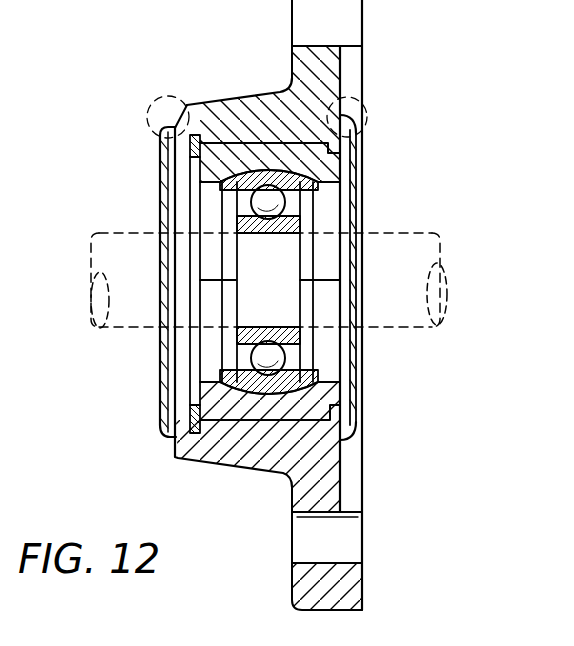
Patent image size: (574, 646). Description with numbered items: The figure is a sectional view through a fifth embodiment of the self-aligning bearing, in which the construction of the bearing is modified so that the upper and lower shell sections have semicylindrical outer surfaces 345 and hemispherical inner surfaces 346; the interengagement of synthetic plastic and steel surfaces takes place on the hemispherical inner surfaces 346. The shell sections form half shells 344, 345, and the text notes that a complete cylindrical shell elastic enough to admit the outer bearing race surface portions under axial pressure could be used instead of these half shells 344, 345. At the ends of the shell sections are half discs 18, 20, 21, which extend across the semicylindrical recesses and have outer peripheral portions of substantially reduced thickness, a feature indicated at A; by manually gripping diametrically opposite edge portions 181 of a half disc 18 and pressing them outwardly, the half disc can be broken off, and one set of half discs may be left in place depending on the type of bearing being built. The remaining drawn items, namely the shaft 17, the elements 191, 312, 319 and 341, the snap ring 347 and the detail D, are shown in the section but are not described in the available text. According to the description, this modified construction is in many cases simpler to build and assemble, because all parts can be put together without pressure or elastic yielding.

The shaft 17 is at (430, 260).
The half disc 18 is at (160, 180).
The half disc 20 is at (160, 360).
The half disc 21 is at (352, 375).
The edge portions 181 is at (160, 273).
The shaft end 191 is at (352, 290).
The ball bearing 312 is at (293, 223).
The bushing 319 is at (352, 255).
The flange 341 is at (288, 472).
The half shell 344 is at (323, 170).
The semicylindrical outer surface 345 is at (243, 412).
The hemispherical inner surface 346 is at (268, 140).
The snap ring 347 is at (188, 193).
The outer peripheral portion of reduced thickness A is at (157, 103).
The detail D is at (358, 97).